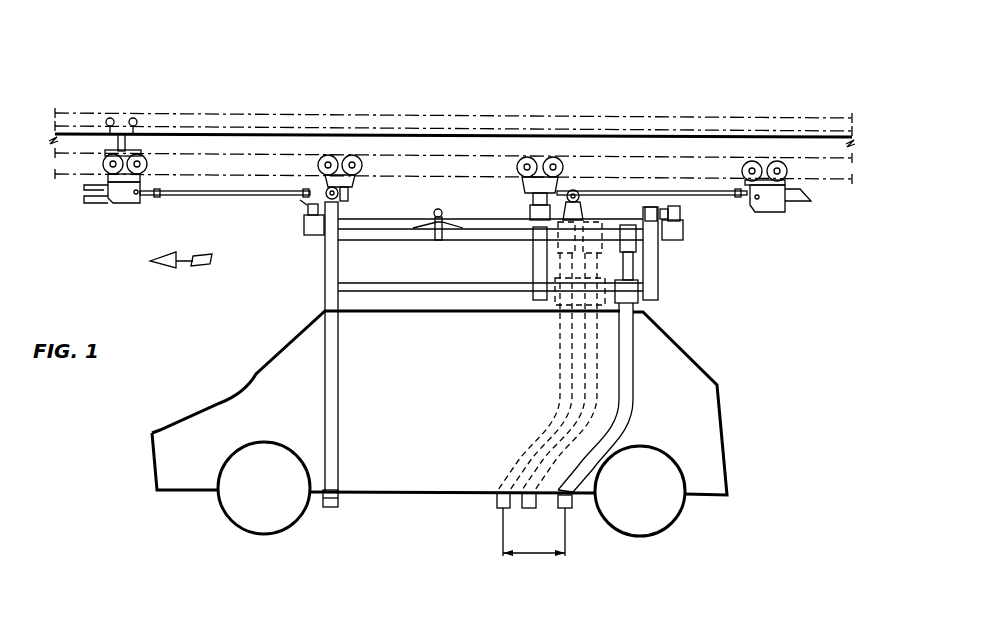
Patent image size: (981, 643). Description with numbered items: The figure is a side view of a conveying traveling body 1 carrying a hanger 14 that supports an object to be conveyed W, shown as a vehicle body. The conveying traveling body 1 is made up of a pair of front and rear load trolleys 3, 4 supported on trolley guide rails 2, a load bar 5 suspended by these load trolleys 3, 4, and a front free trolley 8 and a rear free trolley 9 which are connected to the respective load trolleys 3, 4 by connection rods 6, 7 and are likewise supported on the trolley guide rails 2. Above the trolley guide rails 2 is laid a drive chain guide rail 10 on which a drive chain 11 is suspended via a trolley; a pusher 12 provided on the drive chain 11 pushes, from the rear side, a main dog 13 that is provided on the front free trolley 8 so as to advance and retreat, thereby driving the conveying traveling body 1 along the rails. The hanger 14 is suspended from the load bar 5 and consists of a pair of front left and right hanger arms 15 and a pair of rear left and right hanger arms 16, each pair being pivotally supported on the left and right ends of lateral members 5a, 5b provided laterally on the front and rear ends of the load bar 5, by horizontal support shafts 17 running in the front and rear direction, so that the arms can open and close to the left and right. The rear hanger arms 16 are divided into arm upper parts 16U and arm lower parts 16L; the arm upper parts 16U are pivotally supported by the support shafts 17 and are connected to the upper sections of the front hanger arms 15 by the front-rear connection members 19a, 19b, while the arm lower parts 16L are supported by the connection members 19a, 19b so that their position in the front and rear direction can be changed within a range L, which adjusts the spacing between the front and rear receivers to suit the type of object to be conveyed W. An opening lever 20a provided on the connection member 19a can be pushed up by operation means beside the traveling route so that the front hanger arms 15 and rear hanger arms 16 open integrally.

The conveying traveling body 1 is at (477, 215).
The trolley guide rails 2 is at (416, 167).
The front load trolley 3 is at (340, 155).
The rear load trolley 4 is at (540, 158).
The load bar 5 is at (393, 218).
The lateral member 5a is at (312, 237).
The lateral member 5b is at (685, 230).
The connection rod 6 is at (232, 200).
The connection rod 7 is at (713, 190).
The front free trolley 8 is at (125, 203).
The rear free trolley 9 is at (765, 205).
The drive chain guide rail 10 is at (618, 118).
The drive chain 11 is at (220, 134).
The pusher 12 is at (138, 150).
The main dog 13 is at (112, 152).
The hanger 14 is at (323, 343).
The front hanger arms 15 is at (330, 402).
The rear hanger arms 16 is at (636, 384).
The arm upper part 16U is at (652, 262).
The arm lower part 16L is at (627, 357).
The horizontal support shaft 17 is at (300, 200).
The connection member 19a is at (497, 237).
The connection member 19b is at (442, 292).
The opening lever 20a is at (438, 209).
The object to be conveyed W is at (408, 496).
The range L is at (534, 548).